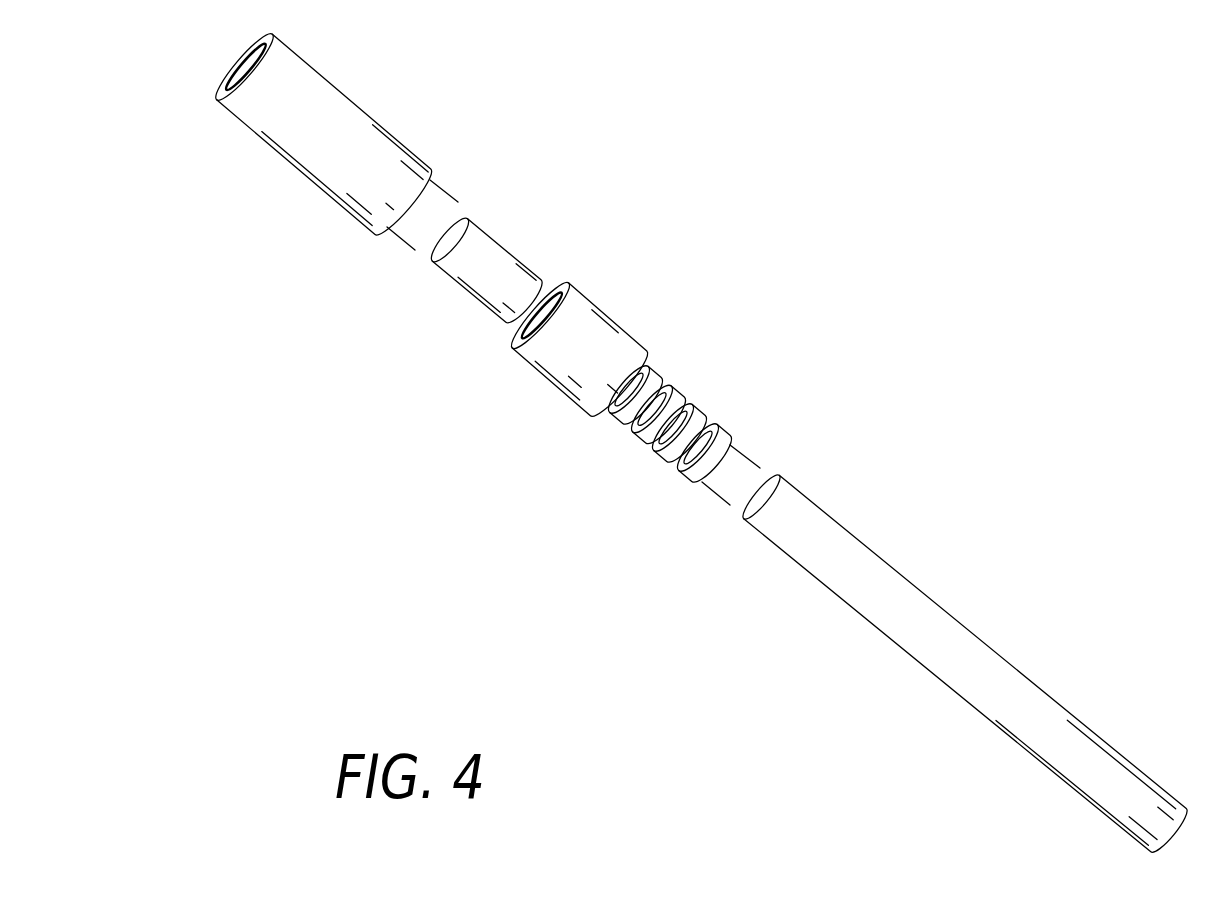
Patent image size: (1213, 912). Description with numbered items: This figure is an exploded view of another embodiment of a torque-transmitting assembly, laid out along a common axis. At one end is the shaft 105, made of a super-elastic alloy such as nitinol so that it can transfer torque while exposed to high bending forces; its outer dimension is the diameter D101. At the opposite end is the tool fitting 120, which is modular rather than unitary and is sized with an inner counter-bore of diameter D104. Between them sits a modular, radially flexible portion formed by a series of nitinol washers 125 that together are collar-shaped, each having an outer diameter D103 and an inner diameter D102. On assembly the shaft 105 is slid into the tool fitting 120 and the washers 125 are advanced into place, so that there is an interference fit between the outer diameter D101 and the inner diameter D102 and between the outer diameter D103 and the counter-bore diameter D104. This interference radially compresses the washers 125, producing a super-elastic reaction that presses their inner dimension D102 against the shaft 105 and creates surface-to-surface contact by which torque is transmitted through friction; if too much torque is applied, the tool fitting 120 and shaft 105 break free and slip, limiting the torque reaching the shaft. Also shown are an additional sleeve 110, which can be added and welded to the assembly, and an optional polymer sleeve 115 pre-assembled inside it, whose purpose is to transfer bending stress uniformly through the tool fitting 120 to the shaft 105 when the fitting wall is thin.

The shaft 105 is at (968, 638).
The sleeve 110 is at (622, 333).
The polymer sleeve 115 is at (500, 257).
The tool fitting 120 is at (352, 117).
The washers 125 is at (695, 402).
The shaft outer diameter D101 is at (787, 635).
The washer inner diameter D102 is at (793, 398).
The washer outer diameter D103 is at (725, 332).
The counter-bore inner diameter D104 is at (400, 243).